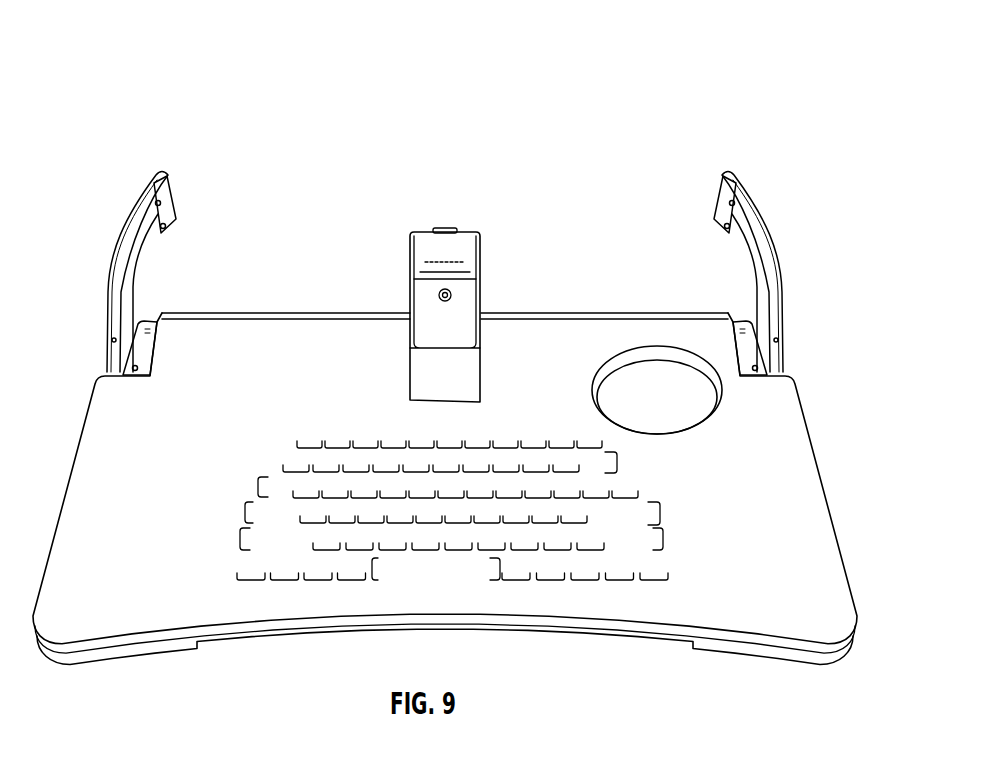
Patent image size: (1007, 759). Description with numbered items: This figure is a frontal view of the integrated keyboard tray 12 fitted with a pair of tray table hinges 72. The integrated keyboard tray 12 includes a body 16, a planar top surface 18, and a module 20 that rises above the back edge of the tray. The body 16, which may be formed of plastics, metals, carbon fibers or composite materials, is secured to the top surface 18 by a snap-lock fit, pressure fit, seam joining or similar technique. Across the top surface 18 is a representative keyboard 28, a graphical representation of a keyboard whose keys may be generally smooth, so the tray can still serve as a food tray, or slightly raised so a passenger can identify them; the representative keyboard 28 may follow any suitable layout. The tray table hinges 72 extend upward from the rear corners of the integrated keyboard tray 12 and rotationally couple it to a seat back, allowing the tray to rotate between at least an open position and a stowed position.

The integrated keyboard tray 12 is at (594, 94).
The body 16 is at (834, 517).
The top surface 18 is at (785, 447).
The module 20 is at (455, 317).
The representative keyboard 28 is at (386, 507).
The tray table hinges 72 is at (758, 221).